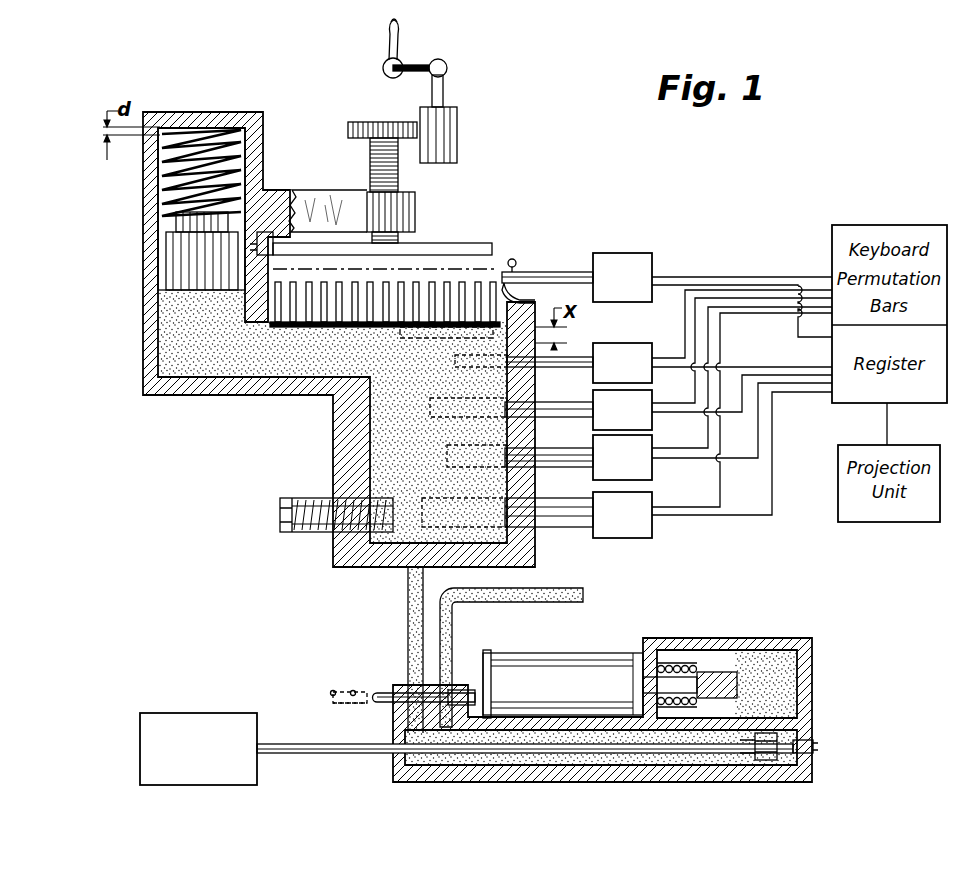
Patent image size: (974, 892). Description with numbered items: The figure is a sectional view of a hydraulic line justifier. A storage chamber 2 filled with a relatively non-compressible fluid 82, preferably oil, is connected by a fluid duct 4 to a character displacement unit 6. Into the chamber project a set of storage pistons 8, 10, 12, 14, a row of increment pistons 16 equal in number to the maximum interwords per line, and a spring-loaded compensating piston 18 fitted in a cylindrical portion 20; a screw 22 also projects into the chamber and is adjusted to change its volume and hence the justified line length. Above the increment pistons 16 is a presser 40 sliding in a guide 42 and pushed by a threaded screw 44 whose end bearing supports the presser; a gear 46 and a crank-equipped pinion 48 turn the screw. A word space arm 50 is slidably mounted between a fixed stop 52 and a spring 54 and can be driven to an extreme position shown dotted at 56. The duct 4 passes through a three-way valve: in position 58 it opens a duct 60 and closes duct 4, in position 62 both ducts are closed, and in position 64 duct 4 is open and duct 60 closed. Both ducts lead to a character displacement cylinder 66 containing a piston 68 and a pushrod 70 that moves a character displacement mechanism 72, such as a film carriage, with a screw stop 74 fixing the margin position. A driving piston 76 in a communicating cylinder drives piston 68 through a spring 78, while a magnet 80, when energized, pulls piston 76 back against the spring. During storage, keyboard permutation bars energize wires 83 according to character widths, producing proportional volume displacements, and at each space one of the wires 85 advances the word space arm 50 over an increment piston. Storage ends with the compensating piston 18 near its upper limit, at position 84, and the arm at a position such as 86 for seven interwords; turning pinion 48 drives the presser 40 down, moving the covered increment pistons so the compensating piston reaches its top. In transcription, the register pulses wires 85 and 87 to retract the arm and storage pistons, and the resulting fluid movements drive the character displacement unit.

The storage chamber 2 is at (200, 396).
The fluid duct 4 is at (408, 580).
The character displacement unit 6 is at (786, 639).
The storage piston 8 is at (587, 357).
The storage piston 10 is at (583, 402).
The storage piston 12 is at (585, 448).
The storage piston 14 is at (585, 498).
The increment pistons 16 is at (398, 282).
The compensating piston 18 is at (204, 290).
The cylindrical portion 20 is at (152, 238).
The screw 22 is at (310, 498).
The presser 40 is at (450, 252).
The guide 42 is at (275, 243).
The threaded screw 44 is at (370, 165).
The gear 46 is at (381, 122).
The pinion 48 is at (457, 141).
The word space arm 50 is at (548, 272).
The fixed stop 52 is at (513, 259).
The spring 54 is at (530, 300).
The extreme position 56 is at (353, 272).
The valve position 58 is at (381, 692).
The duct 60 is at (452, 622).
The valve position 62 is at (355, 704).
The valve position 64 is at (333, 690).
The character displacement cylinder 66 is at (601, 746).
The piston 68 is at (766, 733).
The pushrod 70 is at (319, 753).
The character displacement mechanism 72 is at (190, 720).
The screw stop 74 is at (815, 745).
The driving piston 76 is at (740, 650).
The spring 78 is at (677, 679).
The magnet 80 is at (545, 663).
The fluid 82 is at (332, 416).
The wires 83 is at (829, 309).
The position 84 is at (162, 152).
The wires 85 is at (682, 277).
The position 86 is at (446, 295).
The wires 87 is at (828, 386).